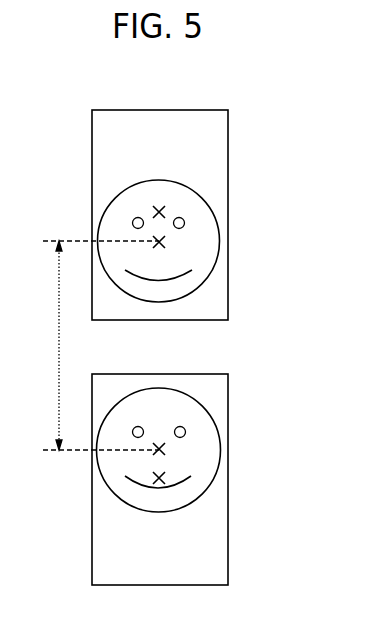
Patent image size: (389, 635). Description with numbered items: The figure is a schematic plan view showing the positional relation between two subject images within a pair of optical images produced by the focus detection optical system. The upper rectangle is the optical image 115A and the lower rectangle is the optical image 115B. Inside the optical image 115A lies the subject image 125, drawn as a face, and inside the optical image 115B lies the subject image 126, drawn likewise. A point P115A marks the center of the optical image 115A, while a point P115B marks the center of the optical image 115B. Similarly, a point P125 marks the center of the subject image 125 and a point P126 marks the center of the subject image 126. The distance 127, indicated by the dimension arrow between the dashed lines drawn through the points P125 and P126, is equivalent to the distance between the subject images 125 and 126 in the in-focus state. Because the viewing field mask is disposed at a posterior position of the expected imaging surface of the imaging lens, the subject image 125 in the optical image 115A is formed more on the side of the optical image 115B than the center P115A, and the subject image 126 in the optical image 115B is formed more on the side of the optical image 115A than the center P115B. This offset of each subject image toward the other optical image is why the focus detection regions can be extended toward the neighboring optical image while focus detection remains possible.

The optical image 115A is at (228, 143).
The optical image 115B is at (228, 547).
The subject image 125 is at (219, 216).
The subject image 126 is at (218, 414).
The center of subject image P125 is at (165, 242).
The center of subject image P126 is at (165, 449).
The center of optical image P115A is at (152, 213).
The center of optical image P115B is at (152, 478).
The distance 127 is at (89, 345).